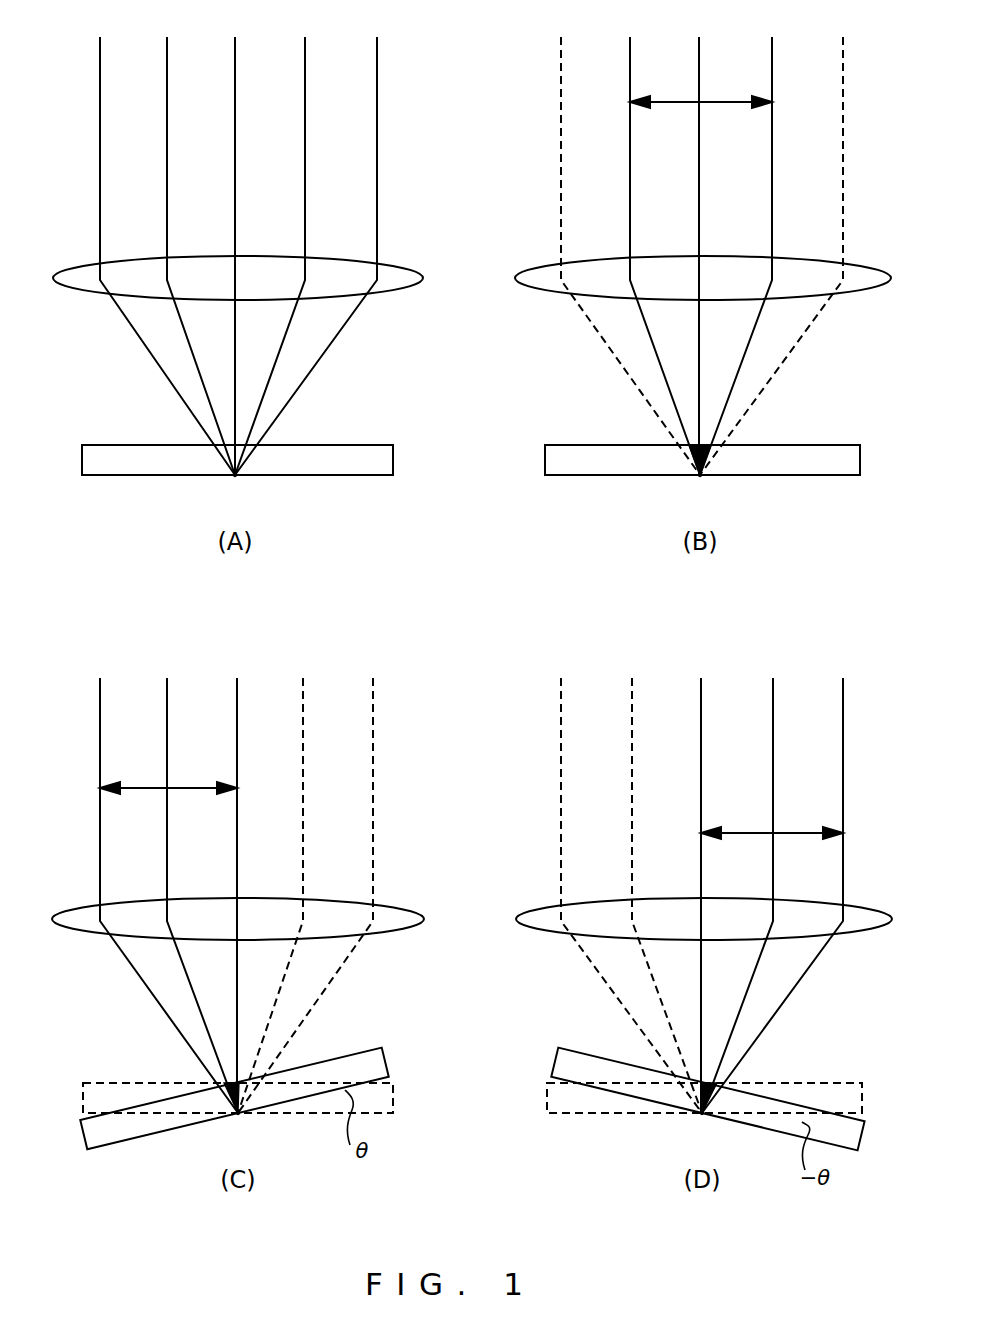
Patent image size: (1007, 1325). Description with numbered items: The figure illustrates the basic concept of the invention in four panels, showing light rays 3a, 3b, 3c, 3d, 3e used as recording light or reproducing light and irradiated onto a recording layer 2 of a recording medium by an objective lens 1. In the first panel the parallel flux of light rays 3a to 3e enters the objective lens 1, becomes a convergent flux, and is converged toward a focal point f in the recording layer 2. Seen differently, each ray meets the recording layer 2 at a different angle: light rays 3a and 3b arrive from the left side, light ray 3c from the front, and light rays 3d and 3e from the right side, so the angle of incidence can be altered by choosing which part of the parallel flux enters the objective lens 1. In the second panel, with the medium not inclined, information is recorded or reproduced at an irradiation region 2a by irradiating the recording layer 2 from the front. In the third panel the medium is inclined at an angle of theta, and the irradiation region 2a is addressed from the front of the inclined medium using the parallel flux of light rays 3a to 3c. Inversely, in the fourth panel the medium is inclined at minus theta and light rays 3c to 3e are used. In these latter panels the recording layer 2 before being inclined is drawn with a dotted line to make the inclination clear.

The objective lens 1 is at (78, 268).
The recording layer 2 is at (115, 446).
The irradiation region 2a is at (691, 461).
The light ray 3a is at (394, 560).
The light ray 3b is at (427, 560).
The light ray 3c is at (468, 560).
The light ray 3d is at (511, 560).
The light ray 3e is at (546, 560).
The focal point f is at (236, 476).